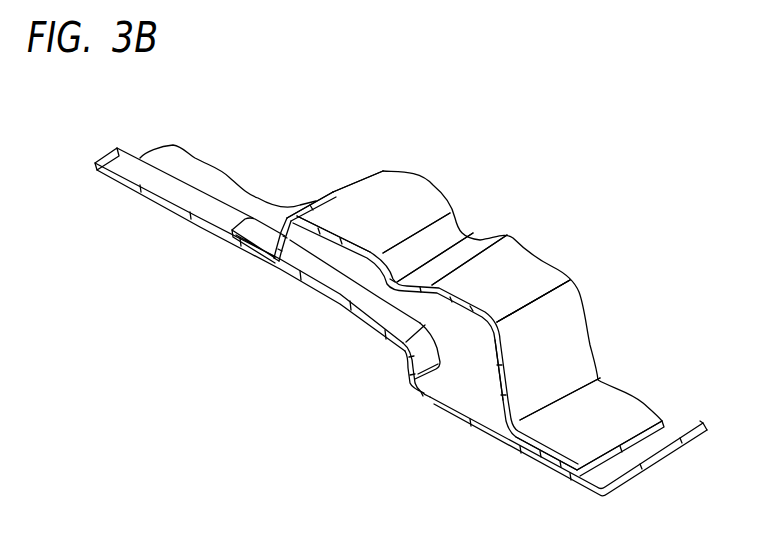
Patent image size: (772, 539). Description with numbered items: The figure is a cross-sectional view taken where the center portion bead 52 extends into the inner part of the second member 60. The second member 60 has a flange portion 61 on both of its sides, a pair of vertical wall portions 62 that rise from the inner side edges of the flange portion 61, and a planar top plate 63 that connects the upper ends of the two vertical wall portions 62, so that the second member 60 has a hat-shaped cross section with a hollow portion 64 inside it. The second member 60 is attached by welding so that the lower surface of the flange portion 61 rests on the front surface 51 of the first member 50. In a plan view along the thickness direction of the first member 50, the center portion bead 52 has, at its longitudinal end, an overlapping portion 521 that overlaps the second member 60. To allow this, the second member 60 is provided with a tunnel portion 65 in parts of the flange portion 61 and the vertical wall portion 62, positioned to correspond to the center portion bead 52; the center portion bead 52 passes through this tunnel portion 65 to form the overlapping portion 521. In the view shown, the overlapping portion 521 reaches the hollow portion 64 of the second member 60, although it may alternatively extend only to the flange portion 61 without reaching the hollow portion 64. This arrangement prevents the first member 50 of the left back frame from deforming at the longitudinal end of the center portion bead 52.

The first member 50 is at (430, 405).
The front surface 51 is at (490, 400).
The center portion bead 52 is at (181, 196).
The overlapping portion 521 is at (385, 313).
The second member 60 is at (418, 186).
The flange portion 61 is at (310, 197).
The vertical wall portions 62 is at (360, 182).
The top plate 63 is at (522, 270).
The hollow portion 64 is at (478, 372).
The tunnel portion 65 is at (290, 262).